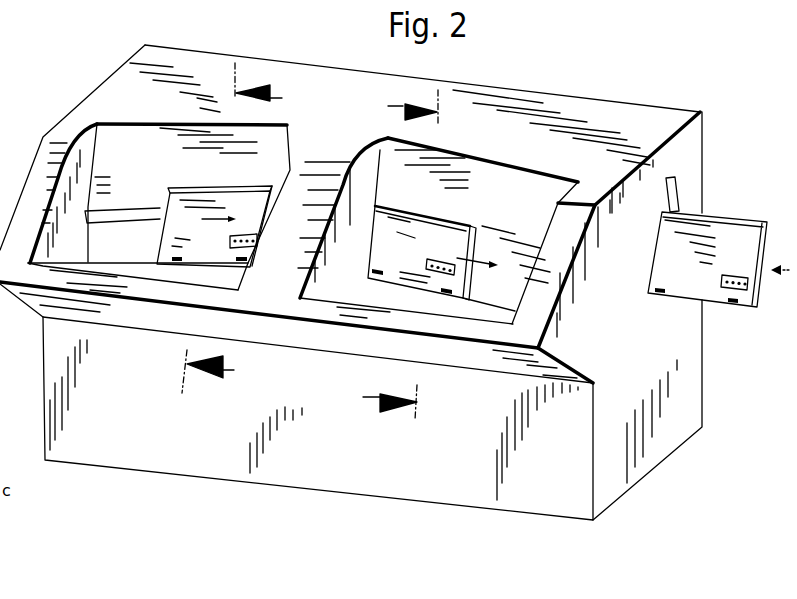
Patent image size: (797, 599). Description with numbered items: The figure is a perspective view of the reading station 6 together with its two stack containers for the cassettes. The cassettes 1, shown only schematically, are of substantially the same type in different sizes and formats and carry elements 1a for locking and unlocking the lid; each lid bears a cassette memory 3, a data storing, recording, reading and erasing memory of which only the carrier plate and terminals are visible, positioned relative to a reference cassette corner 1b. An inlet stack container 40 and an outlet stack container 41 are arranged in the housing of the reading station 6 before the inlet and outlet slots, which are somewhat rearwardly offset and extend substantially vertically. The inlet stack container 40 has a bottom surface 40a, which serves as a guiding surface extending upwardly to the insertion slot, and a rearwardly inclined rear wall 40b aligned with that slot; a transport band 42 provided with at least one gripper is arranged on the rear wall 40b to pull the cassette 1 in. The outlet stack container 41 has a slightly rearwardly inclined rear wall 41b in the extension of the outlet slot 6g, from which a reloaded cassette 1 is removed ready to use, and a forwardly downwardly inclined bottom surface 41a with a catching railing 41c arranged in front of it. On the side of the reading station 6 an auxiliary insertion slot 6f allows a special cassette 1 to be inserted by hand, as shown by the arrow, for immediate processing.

The cassette 1 is at (226, 197).
The elements for locking and unlocking the lid 1a is at (234, 258).
The cassette corner 1b is at (463, 294).
The cassette memory 3 is at (238, 237).
The reading station 6 is at (613, 115).
The auxiliary insertion slot 6f is at (678, 196).
The outlet slot 6g is at (381, 190).
The inlet stack container 40 is at (152, 150).
The bottom surface 40a is at (193, 273).
The rear wall 40b is at (107, 163).
The outlet stack container 41 is at (510, 188).
The bottom surface 41a is at (437, 306).
The rear wall 41b is at (467, 172).
The catching railing 41c is at (412, 310).
The transport band 42 is at (110, 212).